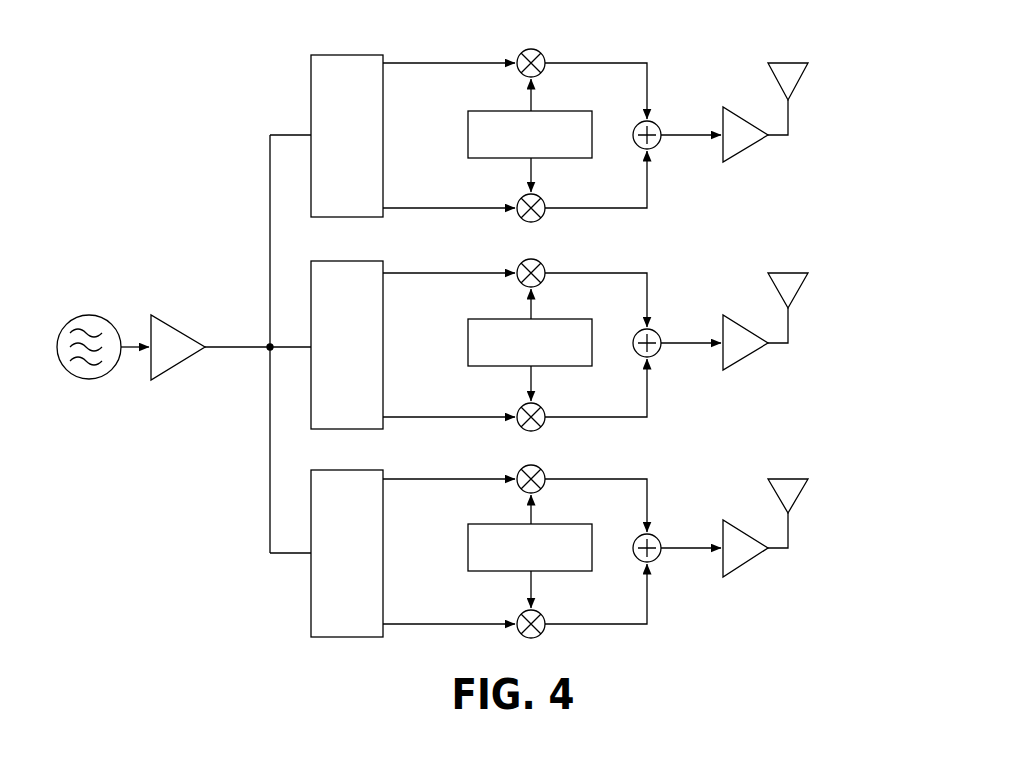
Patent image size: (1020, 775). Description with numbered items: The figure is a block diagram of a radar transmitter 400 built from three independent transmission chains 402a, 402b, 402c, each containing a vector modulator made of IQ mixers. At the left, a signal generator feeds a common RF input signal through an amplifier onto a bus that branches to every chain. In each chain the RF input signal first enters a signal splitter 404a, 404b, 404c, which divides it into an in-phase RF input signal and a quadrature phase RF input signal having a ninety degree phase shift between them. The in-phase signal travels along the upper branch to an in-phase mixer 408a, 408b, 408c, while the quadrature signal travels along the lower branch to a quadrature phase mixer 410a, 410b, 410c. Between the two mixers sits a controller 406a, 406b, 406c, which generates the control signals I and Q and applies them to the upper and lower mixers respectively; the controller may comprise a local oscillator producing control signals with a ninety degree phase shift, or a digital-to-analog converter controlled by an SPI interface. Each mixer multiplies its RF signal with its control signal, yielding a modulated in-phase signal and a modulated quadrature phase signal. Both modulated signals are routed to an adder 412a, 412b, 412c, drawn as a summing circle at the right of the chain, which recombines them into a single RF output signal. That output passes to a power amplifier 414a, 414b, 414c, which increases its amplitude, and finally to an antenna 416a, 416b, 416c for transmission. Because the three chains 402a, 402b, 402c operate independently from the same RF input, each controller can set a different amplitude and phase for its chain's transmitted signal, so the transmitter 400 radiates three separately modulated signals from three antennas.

The radar transmitter 400 is at (157, 43).
The first transmission chain 402a is at (664, 50).
The second transmission chain 402b is at (664, 260).
The third transmission chain 402c is at (664, 472).
The first signal splitter 404a is at (383, 55).
The signal splitter 404b is at (383, 261).
The signal splitter 404c is at (383, 470).
The first controller 406a is at (580, 110).
The controller 406b is at (580, 318).
The controller 406c is at (580, 523).
The first IQ mixer 408a is at (540, 52).
The in-phase mixer 408b is at (540, 262).
The in-phase mixer 408c is at (540, 468).
The quadrature phase mixer 410a is at (543, 200).
The quadrature phase mixer 410b is at (543, 409).
The quadrature phase mixer 410c is at (543, 616).
The adder 412a is at (657, 125).
The adder 412b is at (657, 333).
The adder 412c is at (657, 538).
The power amplifier 414a is at (745, 149).
The power amplifier 414b is at (745, 357).
The power amplifier 414c is at (745, 563).
The antenna 416a is at (800, 66).
The antenna 416b is at (797, 298).
The antenna 416c is at (800, 481).